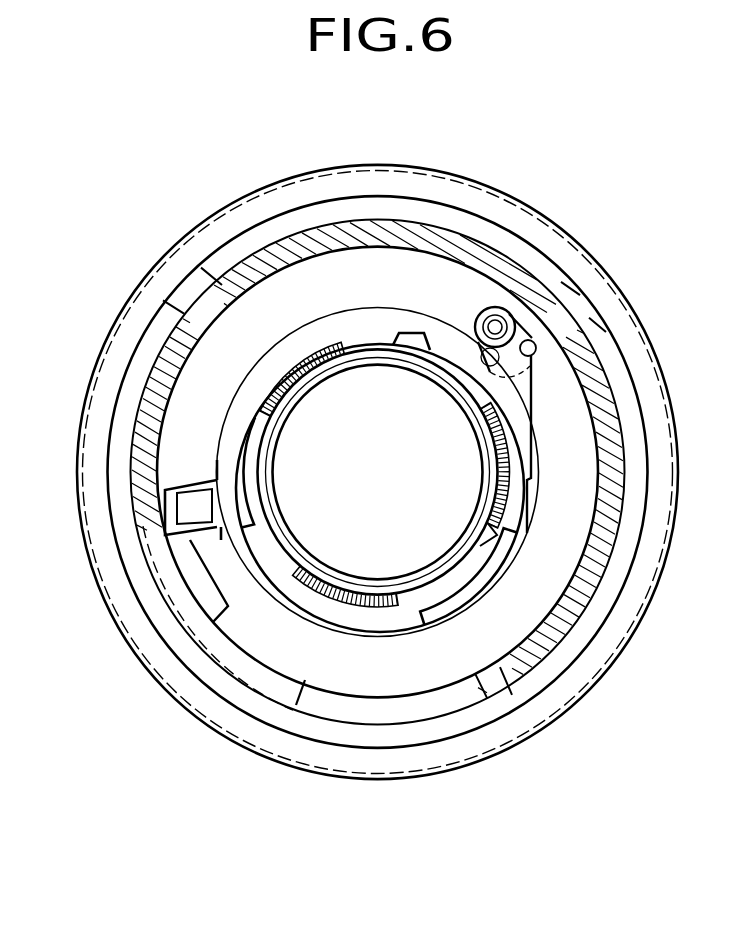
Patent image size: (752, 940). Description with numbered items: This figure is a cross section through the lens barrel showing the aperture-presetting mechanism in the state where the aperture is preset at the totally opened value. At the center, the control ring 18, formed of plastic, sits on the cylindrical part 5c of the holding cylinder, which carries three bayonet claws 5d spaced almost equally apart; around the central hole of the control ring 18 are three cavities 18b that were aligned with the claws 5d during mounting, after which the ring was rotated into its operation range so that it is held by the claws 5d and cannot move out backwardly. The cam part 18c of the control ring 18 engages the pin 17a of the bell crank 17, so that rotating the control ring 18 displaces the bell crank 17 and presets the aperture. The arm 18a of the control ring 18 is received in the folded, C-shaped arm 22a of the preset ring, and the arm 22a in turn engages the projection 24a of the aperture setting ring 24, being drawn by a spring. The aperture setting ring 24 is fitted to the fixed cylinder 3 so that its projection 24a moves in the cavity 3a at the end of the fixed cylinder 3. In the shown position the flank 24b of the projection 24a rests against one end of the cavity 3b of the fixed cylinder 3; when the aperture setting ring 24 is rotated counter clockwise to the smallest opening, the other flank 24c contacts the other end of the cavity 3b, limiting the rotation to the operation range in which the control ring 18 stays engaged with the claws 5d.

The fixed cylinder 3 is at (167, 367).
The cavity at the end of the fixed cylinder 3a is at (408, 715).
The cavity of the fixed cylinder 3b is at (160, 490).
The cylindrical part of the holding cylinder 5c is at (490, 537).
The bayonet claws 5d is at (302, 352).
The bell crank 17 is at (484, 312).
The pin of the bell crank 17a is at (533, 353).
The control ring 18 is at (376, 330).
The arm of the control ring 18a is at (218, 530).
The cavities of the control ring 18b is at (243, 437).
The cam part of the control ring 18c is at (532, 432).
The folded C-shaped arm of the preset ring 22a is at (176, 520).
The aperture setting ring 24 is at (348, 192).
The projection of the aperture setting ring 24a is at (212, 585).
The flank of the projection 24b is at (143, 524).
The flank of the projection 24c is at (300, 706).